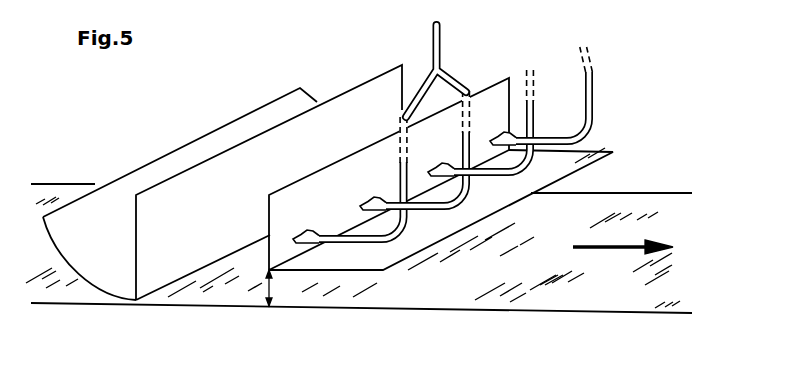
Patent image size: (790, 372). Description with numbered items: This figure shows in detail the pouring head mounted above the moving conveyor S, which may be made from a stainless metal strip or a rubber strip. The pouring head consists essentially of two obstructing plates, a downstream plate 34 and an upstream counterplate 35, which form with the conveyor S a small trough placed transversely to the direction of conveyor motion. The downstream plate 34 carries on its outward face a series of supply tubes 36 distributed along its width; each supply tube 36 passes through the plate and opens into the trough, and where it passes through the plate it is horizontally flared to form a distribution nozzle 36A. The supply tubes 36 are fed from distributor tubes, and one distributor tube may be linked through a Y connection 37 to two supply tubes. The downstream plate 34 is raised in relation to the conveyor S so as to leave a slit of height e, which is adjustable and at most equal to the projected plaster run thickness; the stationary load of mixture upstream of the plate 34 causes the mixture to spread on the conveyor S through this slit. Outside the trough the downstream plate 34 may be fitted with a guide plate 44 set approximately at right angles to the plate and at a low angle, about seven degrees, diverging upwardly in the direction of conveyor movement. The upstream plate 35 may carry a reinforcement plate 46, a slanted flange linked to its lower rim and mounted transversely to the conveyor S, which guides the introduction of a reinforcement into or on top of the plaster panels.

The upstream counterplate 35 is at (222, 192).
The reinforcement plate 46 is at (98, 260).
The downstream plate 34 is at (495, 103).
The guide plate 44 is at (576, 161).
The supply tube 36 is at (597, 92).
The distribution nozzle 36A is at (317, 230).
The Y connection 37 is at (430, 67).
The conveyor S is at (453, 297).
The slit height e is at (277, 288).